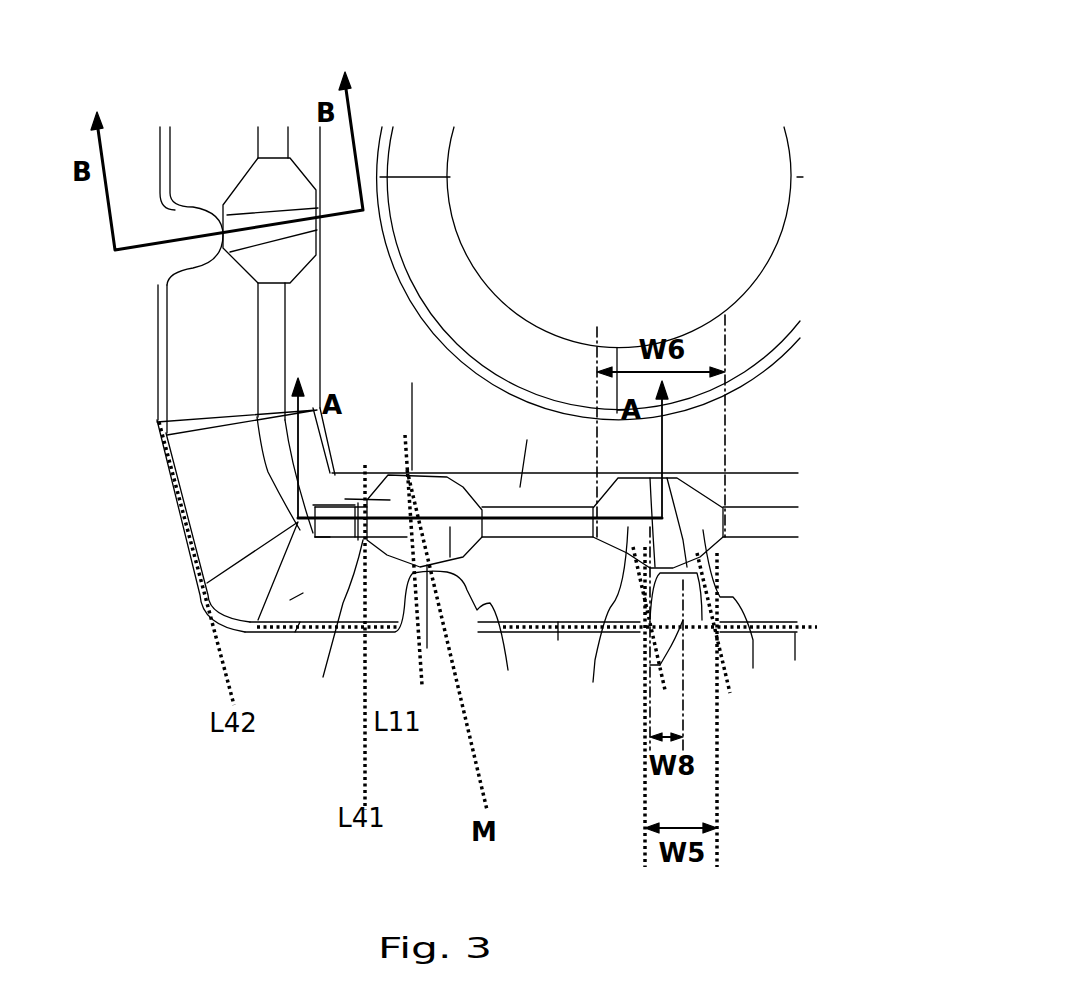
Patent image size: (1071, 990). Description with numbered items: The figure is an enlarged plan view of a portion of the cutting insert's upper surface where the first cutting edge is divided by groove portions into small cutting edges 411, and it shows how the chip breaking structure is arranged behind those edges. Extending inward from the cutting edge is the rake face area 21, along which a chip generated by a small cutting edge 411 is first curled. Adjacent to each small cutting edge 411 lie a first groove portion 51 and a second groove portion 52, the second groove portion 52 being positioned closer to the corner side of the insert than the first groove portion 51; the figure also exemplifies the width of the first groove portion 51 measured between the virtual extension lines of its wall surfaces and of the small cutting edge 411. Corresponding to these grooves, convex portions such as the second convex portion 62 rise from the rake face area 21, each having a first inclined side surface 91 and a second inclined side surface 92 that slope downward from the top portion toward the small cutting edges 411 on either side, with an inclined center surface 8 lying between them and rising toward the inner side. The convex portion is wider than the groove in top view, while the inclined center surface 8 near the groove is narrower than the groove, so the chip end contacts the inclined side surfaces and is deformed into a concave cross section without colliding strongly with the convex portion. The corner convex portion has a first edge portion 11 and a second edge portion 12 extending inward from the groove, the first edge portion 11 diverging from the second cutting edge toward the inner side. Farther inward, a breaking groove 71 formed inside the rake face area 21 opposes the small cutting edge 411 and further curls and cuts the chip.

The inclined center surface 8 is at (412, 383).
The breaking groove 71 is at (527, 440).
The second convex portion 62 is at (313, 505).
The second edge portion 12 is at (345, 499).
The first edge portion 11 is at (315, 537).
The rake face area 21 is at (303, 593).
The first inclined side surface 91 is at (466, 622).
The second inclined side surface 92 is at (595, 618).
The second groove portion 52 is at (427, 648).
The first groove portion 51 is at (660, 665).
The small cutting edge 411 is at (295, 632).